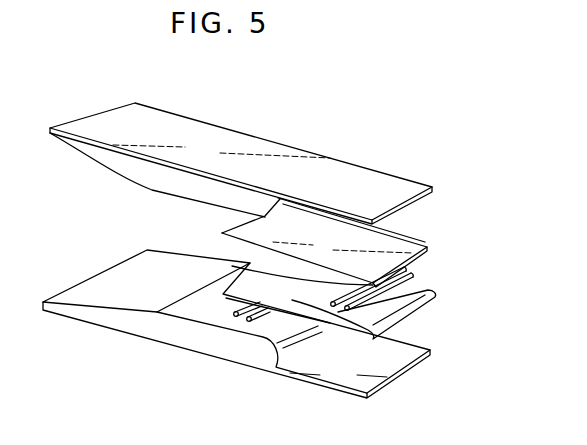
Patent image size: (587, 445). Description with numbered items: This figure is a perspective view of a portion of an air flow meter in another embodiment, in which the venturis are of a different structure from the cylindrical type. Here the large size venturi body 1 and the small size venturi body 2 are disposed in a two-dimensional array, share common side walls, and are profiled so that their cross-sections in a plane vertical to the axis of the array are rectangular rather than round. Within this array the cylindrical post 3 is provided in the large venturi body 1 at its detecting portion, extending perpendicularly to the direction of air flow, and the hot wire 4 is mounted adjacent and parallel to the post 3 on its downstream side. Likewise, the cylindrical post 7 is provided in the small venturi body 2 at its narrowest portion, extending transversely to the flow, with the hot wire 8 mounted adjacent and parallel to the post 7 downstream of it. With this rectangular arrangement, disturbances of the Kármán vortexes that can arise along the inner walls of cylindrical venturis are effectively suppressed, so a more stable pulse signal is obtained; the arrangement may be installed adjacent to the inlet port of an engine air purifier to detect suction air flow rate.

The large size venturi body 1 is at (201, 200).
The small size venturi body 2 is at (331, 288).
The cylindrical post 3 is at (249, 322).
The hot wire 4 is at (235, 316).
The cylindrical post 7 is at (347, 311).
The hot wire 8 is at (333, 307).